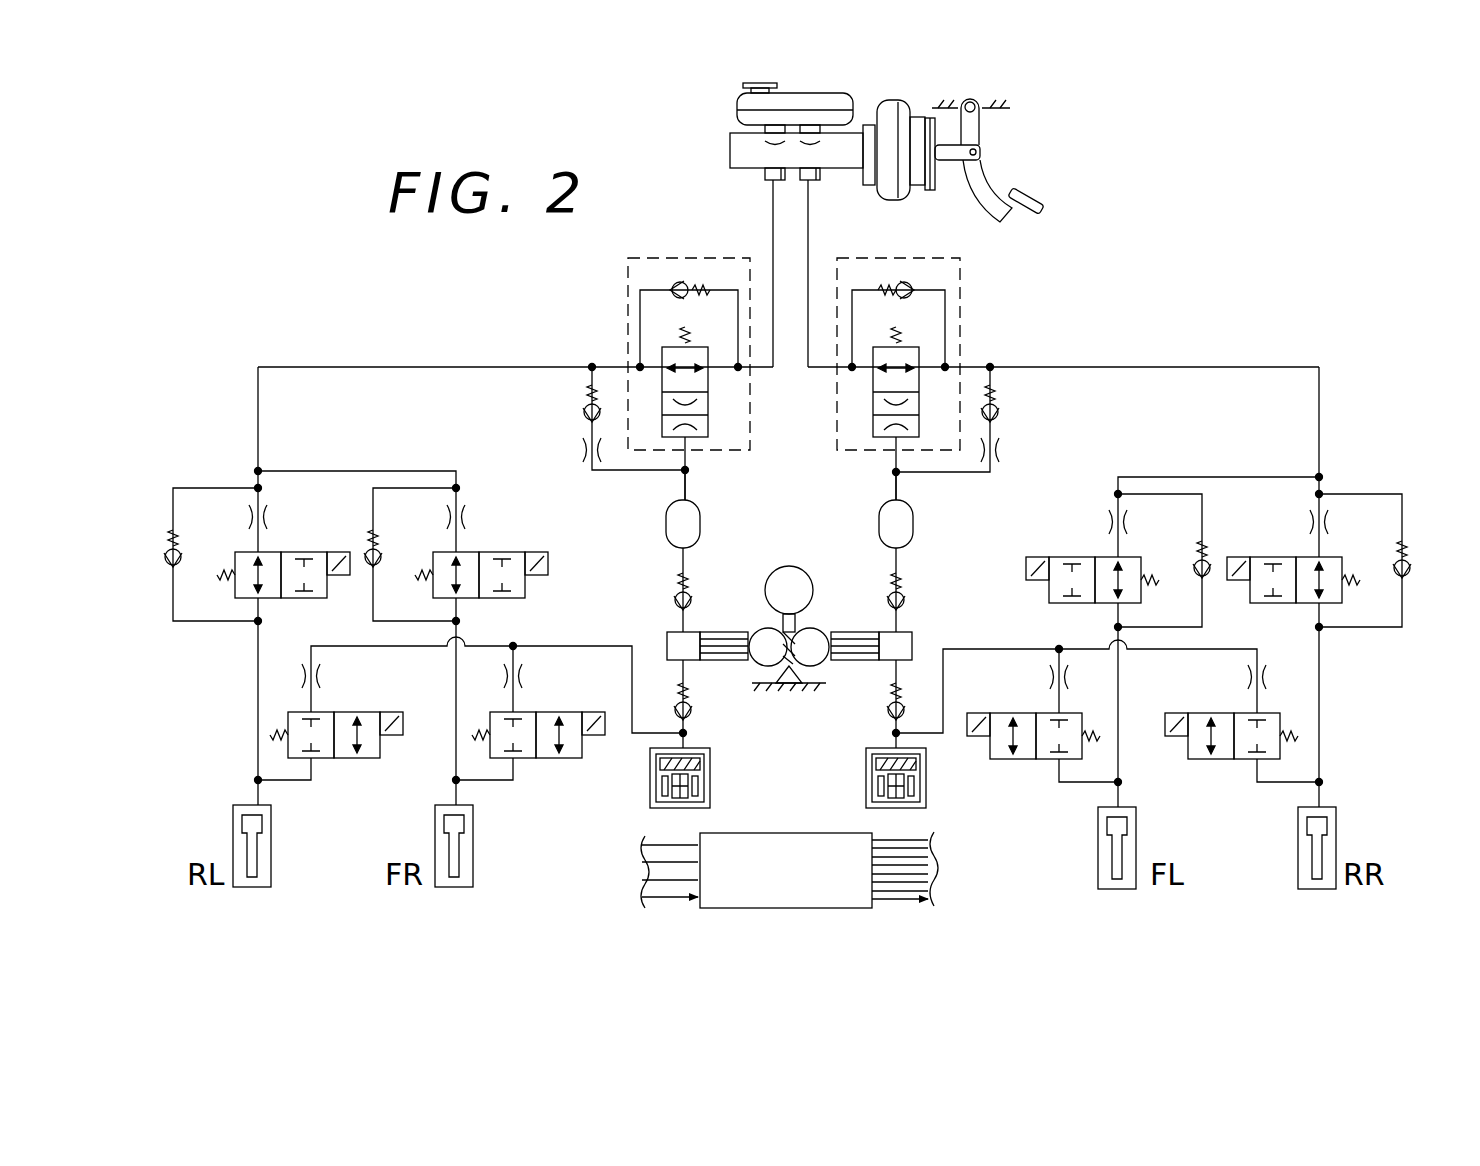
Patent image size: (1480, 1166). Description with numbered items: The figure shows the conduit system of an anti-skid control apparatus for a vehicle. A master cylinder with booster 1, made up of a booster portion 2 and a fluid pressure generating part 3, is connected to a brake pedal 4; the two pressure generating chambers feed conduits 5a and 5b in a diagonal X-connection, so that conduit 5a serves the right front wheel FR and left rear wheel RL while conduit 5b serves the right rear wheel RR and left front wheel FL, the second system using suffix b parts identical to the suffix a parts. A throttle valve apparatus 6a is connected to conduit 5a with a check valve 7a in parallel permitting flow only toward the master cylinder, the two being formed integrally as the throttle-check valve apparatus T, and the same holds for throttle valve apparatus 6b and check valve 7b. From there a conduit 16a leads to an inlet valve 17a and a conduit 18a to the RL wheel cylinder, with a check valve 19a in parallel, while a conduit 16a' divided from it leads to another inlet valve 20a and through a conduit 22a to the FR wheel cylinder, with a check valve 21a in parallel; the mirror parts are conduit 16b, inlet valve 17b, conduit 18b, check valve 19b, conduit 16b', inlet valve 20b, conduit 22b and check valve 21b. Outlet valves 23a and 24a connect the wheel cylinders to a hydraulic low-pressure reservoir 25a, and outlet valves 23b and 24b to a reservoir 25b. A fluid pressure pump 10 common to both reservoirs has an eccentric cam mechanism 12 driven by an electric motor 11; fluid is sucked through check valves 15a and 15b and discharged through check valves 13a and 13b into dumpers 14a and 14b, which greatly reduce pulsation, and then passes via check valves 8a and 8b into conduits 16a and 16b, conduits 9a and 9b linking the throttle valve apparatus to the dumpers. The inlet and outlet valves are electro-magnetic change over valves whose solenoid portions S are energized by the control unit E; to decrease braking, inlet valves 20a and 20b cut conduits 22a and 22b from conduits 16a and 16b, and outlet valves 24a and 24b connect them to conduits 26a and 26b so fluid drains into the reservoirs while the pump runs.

The master cylinder with booster 1 is at (1030, 132).
The booster portion 2 is at (905, 198).
The fluid pressure generating part 3 is at (745, 152).
The brake pedal 4 is at (1032, 194).
The conduit 5a is at (773, 385).
The conduit 5b is at (808, 400).
The throttle valve apparatus 6a is at (710, 428).
The throttle valve apparatus 6b is at (873, 430).
The check valve 7a is at (684, 283).
The check valve 7b is at (898, 283).
The check valve 8a is at (586, 412).
The check valve 8b is at (998, 412).
The conduit 9a is at (684, 488).
The conduit 9b is at (896, 488).
The fluid pressure pump 10 is at (822, 578).
The electric motor 11 is at (768, 596).
The eccentric cam mechanism 12 is at (812, 640).
The check valve 13a is at (676, 600).
The check valve 13b is at (904, 600).
The dumper 14a is at (700, 523).
The dumper 14b is at (879, 523).
The check valve 15a is at (692, 712).
The check valve 15b is at (888, 712).
The conduit 16a is at (515, 427).
The conduit 16a' is at (356, 453).
The conduit 16b is at (1102, 430).
The conduit 16b' is at (1220, 462).
The inlet valve 17a is at (295, 552).
The inlet valve 17b is at (1283, 557).
The conduit 18a is at (258, 712).
The conduit 18b is at (1322, 748).
The check valve 19a is at (170, 540).
The check valve 19b is at (1405, 580).
The inlet valve 20a is at (507, 552).
The inlet valve 20b is at (1052, 603).
The check valve 21a is at (378, 550).
The check valve 21b is at (1200, 557).
The conduit 22a is at (460, 798).
The conduit 22b is at (1121, 768).
The outlet valve 23a is at (350, 760).
The outlet valve 23b is at (1220, 765).
The outlet valve 24a is at (557, 760).
The outlet valve 24b is at (1005, 765).
The hydraulic low-pressure reservoir 25a is at (712, 782).
The hydraulic low-pressure reservoir 25b is at (864, 778).
The conduit 26a is at (632, 650).
The conduit 26b is at (975, 635).
The control unit E is at (718, 908).
The throttle-check valve apparatus T is at (657, 248).
The solenoid portion S is at (578, 452).